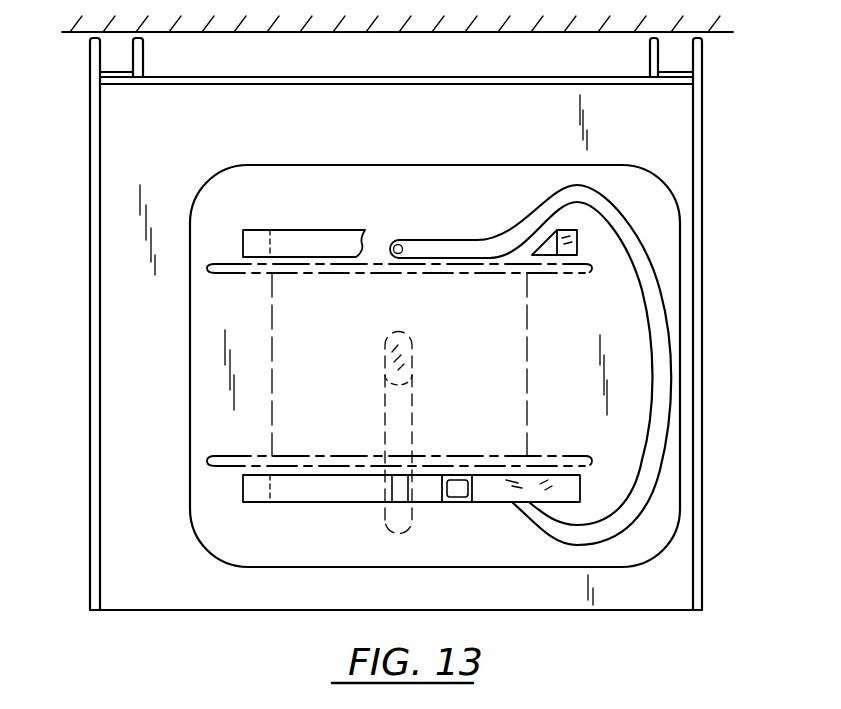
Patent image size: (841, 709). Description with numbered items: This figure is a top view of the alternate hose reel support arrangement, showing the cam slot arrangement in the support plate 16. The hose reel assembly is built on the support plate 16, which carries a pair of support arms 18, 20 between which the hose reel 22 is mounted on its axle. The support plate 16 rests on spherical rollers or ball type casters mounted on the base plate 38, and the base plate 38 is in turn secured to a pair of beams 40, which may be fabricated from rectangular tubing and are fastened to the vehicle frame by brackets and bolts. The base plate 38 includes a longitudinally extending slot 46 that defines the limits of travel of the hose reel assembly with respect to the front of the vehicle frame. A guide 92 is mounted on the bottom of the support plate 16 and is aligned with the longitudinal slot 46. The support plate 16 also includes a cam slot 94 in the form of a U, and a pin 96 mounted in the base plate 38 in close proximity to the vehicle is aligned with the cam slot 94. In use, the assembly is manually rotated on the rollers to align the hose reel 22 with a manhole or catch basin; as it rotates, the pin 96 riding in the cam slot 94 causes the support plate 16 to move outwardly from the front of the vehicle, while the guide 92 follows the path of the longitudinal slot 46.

The support plate 16 is at (455, 165).
The support arm 18 is at (334, 476).
The support arm 20 is at (318, 246).
The hose reel 22 is at (206, 462).
The base plate 38 is at (660, 610).
The beams 40 is at (88, 58).
The longitudinally extending slot 46 is at (403, 532).
The guide 92 is at (410, 360).
The cam slot 94 is at (662, 355).
The pin 96 is at (403, 245).